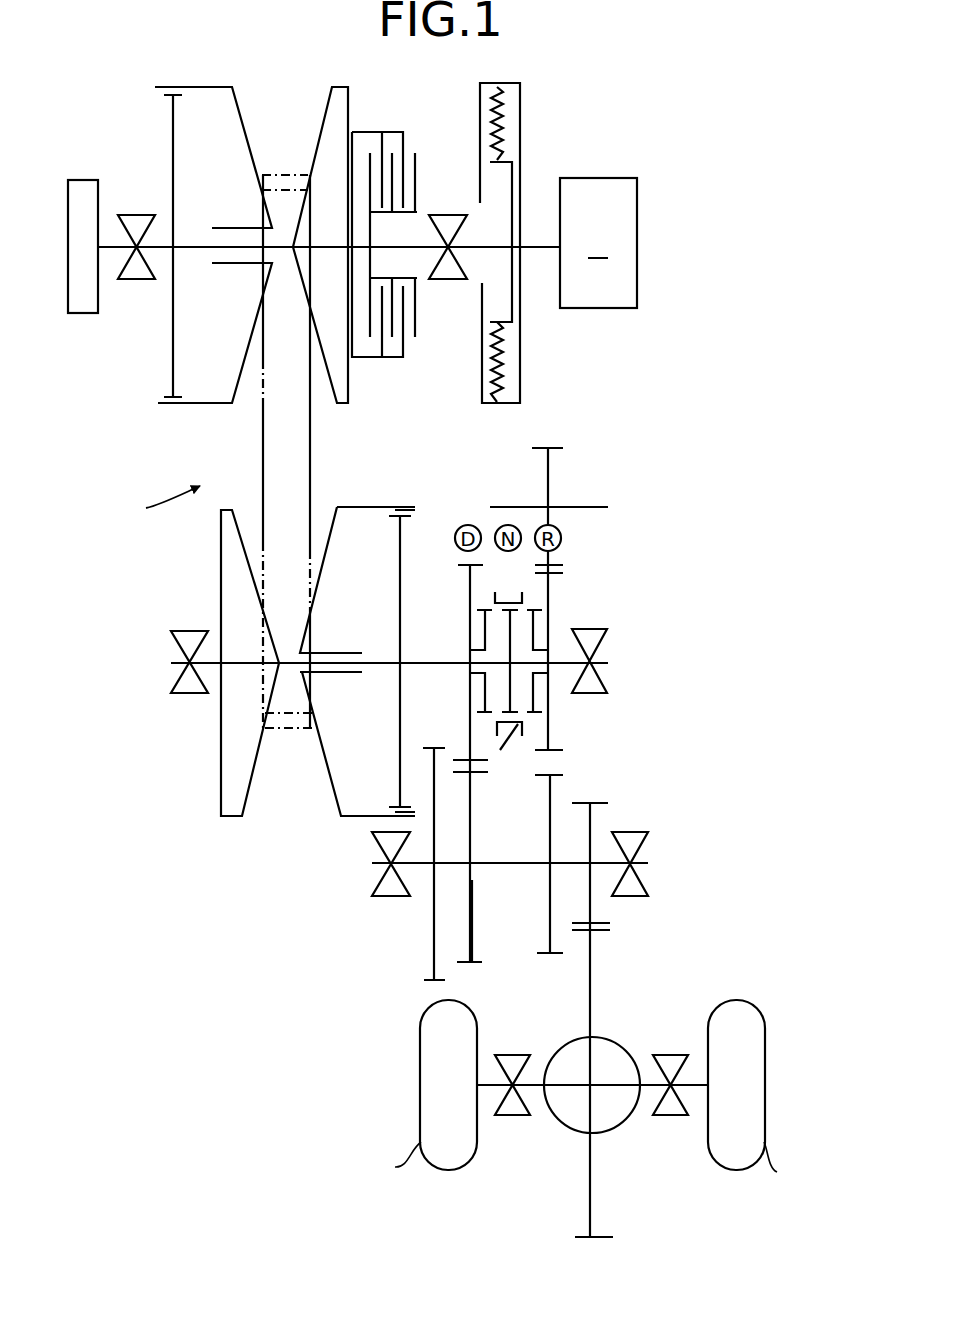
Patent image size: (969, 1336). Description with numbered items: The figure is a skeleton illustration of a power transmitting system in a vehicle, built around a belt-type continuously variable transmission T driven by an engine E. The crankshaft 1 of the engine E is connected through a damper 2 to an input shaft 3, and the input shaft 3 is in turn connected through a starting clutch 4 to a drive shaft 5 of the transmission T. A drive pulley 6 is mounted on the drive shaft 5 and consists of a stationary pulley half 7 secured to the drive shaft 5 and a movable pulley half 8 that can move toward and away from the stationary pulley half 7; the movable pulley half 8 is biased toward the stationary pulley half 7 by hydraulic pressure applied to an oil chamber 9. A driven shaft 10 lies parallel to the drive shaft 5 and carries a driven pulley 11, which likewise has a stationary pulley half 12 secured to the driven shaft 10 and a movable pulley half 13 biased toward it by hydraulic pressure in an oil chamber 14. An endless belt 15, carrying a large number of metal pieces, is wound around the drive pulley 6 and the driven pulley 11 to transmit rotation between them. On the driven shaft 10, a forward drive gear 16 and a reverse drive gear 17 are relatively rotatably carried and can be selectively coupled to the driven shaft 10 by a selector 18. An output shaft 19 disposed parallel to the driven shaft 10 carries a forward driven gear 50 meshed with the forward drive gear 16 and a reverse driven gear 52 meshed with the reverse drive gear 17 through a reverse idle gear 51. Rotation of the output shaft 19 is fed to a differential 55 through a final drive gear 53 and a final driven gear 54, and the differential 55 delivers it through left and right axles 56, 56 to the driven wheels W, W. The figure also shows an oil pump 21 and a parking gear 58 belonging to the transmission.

The crankshaft 1 is at (547, 250).
The damper 2 is at (528, 110).
The input shaft 3 is at (478, 243).
The starting clutch 4 is at (391, 122).
The drive shaft 5 is at (193, 245).
The drive pulley 6 is at (251, 217).
The stationary pulley half 7 is at (332, 116).
The movable pulley half 8 is at (237, 110).
The oil chamber 9 is at (204, 336).
The driven shaft 10 is at (432, 660).
The driven pulley 11 is at (284, 686).
The stationary pulley half 12 is at (222, 549).
The movable pulley half 13 is at (331, 540).
The oil chamber 14 is at (347, 739).
The endless belt 15 is at (313, 480).
The forward drive gear 16 is at (458, 565).
The reverse drive gear 17 is at (563, 577).
The selector 18 is at (488, 770).
The output shaft 19 is at (506, 862).
The oil pump 21 is at (85, 178).
The forward driven gear 50 is at (477, 963).
The reverse idle gear 51 is at (560, 447).
The reverse driven gear 52 is at (545, 955).
The final drive gear 53 is at (610, 804).
The final driven gear 54 is at (604, 932).
The differential 55 is at (628, 1050).
The axle 56 is at (535, 1088).
The parking gear 58 is at (428, 747).
The engine E is at (598, 243).
The belt-type continuously variable transmission T is at (162, 503).
The driven wheel W is at (586, 1097).